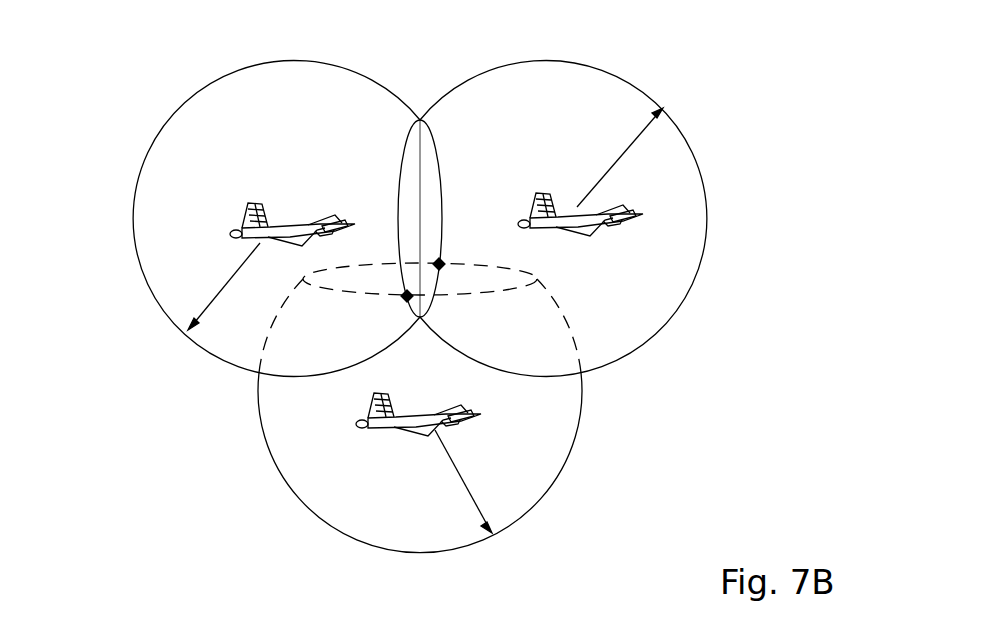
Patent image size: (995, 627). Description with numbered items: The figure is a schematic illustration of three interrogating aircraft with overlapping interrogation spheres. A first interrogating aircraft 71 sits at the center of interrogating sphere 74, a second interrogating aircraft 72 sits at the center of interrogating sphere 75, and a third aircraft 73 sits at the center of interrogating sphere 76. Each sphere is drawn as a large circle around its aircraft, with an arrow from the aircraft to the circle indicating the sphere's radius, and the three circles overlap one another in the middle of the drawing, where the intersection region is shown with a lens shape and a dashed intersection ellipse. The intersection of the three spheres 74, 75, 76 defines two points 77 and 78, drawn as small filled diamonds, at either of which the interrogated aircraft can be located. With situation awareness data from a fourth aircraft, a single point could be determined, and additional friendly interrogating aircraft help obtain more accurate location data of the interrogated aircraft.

The first interrogating aircraft 71 is at (290, 217).
The second interrogating aircraft 72 is at (622, 207).
The third aircraft 73 is at (398, 430).
The interrogating sphere 74 is at (143, 163).
The interrogating sphere 75 is at (630, 80).
The interrogating sphere 76 is at (573, 442).
The point 77 is at (441, 262).
The point 78 is at (405, 298).